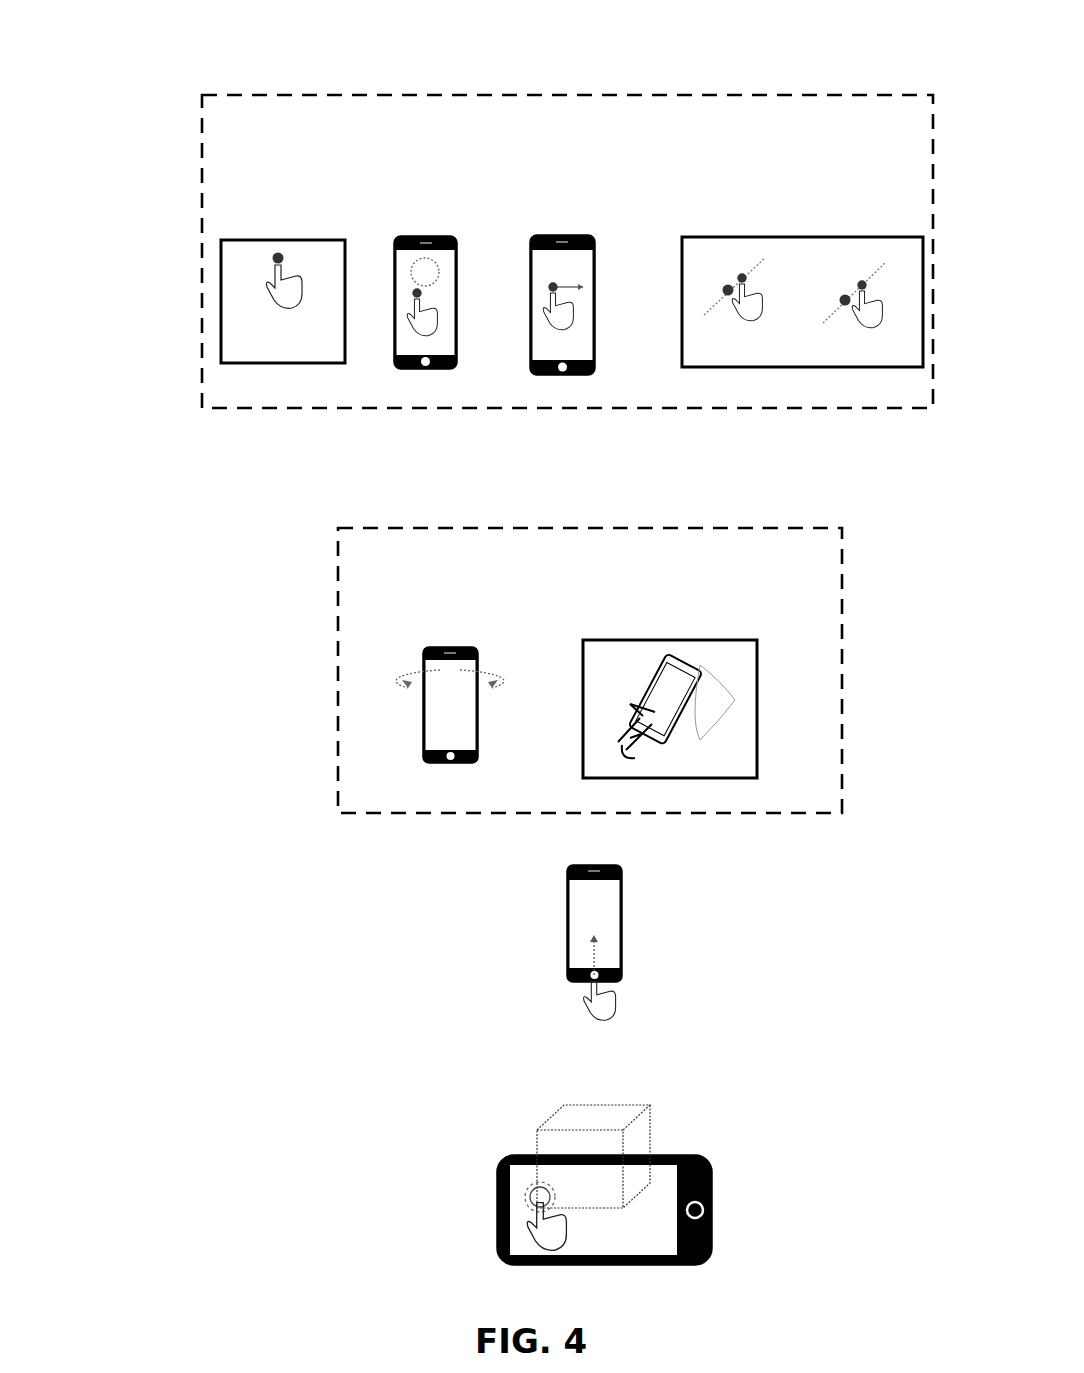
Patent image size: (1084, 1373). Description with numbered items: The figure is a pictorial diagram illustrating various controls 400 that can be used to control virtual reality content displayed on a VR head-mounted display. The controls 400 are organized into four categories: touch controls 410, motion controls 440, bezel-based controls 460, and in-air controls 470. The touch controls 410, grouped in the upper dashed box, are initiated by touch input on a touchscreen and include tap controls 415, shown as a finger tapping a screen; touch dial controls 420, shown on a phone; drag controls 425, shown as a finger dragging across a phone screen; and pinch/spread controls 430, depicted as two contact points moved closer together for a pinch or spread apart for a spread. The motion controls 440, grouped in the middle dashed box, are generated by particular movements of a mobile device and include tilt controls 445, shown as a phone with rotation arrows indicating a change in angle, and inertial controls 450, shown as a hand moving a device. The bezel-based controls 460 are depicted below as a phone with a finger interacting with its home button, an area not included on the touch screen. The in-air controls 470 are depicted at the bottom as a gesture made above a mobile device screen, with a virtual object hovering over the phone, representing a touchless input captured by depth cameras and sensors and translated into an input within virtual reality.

The controls 400 is at (148, 71).
The touch controls 410 is at (200, 270).
The tap controls 415 is at (231, 240).
The touch dial controls 420 is at (406, 237).
The drag controls 425 is at (528, 240).
The pinch/spread controls 430 is at (697, 237).
The motion controls 440 is at (338, 722).
The tilt controls 445 is at (426, 647).
The inertial controls 450 is at (603, 640).
The bezel-based controls 460 is at (567, 983).
The in-air controls 470 is at (497, 1207).